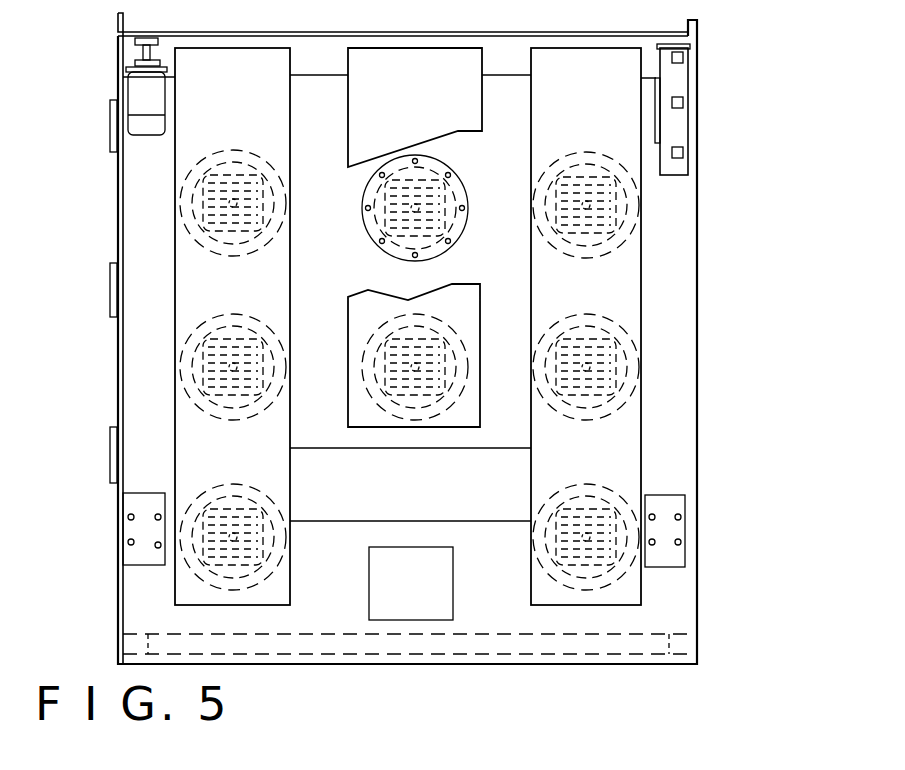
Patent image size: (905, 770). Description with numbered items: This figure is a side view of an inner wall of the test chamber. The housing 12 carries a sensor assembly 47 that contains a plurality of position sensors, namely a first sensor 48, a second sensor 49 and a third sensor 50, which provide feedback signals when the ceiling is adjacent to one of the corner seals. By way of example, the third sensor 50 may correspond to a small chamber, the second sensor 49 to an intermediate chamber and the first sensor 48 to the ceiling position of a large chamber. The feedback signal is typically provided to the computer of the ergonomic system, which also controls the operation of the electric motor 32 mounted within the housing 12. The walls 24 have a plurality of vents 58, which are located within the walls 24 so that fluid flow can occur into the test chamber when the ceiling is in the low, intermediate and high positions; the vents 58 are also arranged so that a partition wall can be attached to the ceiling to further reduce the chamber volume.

The housing 12 is at (713, 498).
The walls 24 is at (634, 256).
The electric motor 32 is at (135, 95).
The sensor assembly 47 is at (734, 102).
The first sensor 48 is at (677, 57).
The second sensor 49 is at (679, 103).
The third sensor 50 is at (679, 153).
The vents 58 is at (248, 231).